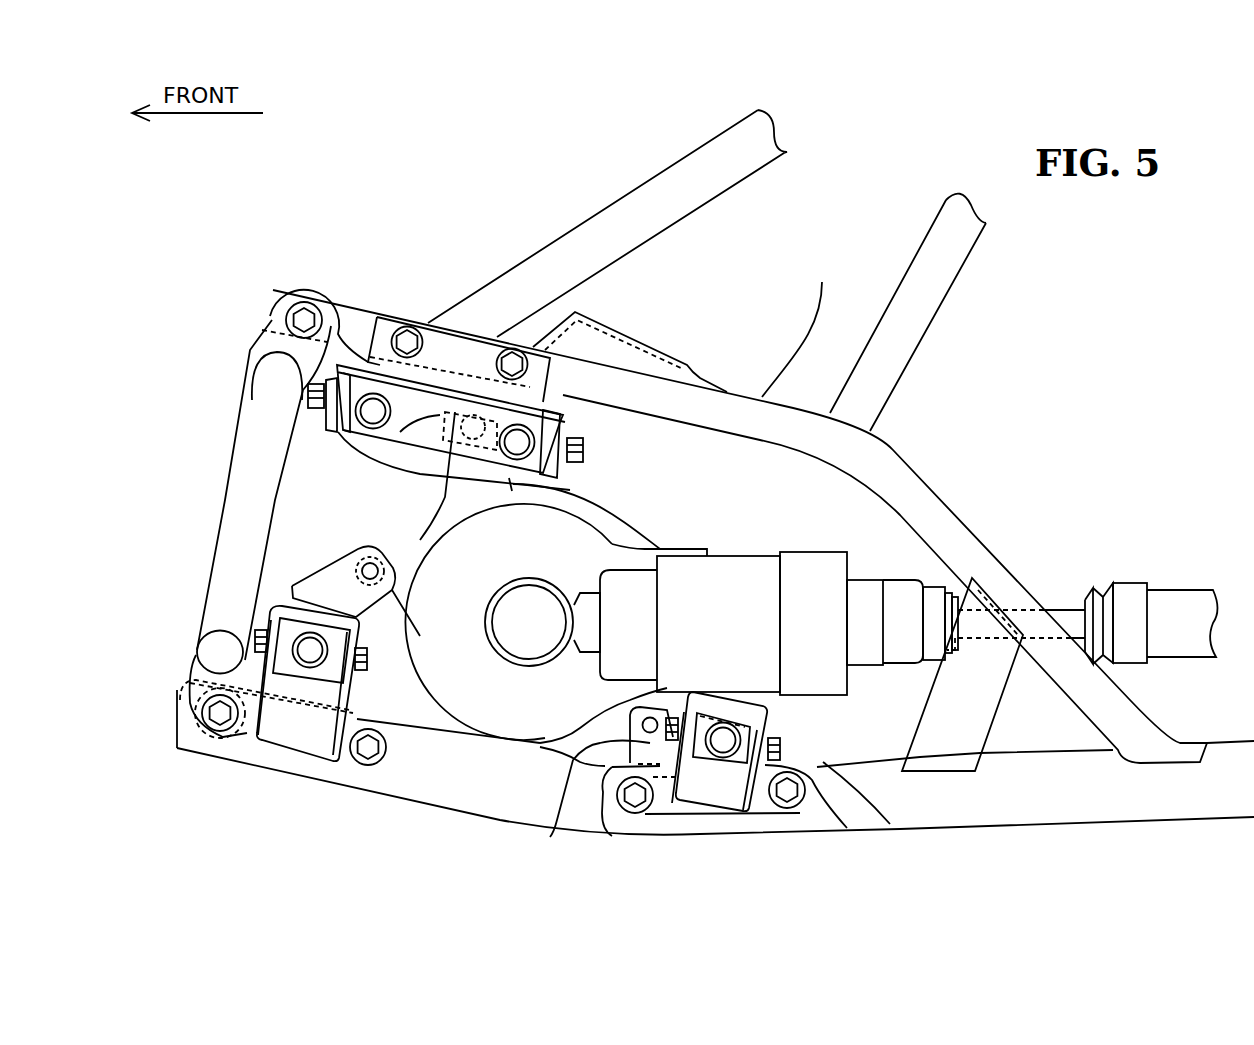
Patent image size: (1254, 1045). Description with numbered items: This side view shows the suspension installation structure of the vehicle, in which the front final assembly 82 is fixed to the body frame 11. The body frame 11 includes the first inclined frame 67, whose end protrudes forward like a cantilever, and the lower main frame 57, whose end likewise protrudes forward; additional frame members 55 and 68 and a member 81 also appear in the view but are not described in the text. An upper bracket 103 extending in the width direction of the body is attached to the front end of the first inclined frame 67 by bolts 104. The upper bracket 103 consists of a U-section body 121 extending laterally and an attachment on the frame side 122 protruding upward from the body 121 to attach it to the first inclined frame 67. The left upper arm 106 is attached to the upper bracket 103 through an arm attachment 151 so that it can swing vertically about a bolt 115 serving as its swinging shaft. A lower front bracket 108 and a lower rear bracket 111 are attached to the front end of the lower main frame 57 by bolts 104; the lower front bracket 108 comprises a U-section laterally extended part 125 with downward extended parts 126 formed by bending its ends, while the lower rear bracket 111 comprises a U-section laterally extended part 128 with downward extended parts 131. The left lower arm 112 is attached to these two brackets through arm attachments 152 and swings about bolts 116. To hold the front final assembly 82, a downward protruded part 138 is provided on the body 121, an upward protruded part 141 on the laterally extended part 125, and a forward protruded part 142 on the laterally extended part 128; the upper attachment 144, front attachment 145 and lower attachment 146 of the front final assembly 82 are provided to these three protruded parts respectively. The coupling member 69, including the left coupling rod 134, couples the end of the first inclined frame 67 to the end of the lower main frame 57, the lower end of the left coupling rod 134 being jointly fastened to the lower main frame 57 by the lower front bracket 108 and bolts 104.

The body frame 11 is at (938, 490).
The seat frame tube 55 is at (653, 177).
The lower main frame 57 is at (448, 820).
The first inclined frame 67 is at (798, 326).
The rear frame tube 68 is at (914, 250).
The coupling member 69 is at (238, 429).
The damper rod 81 is at (1065, 597).
The front final assembly 82 is at (692, 545).
The upper bracket 103 is at (453, 352).
The bolt 104 is at (215, 723).
The left upper arm 106 is at (568, 440).
The lower front bracket 108 is at (297, 726).
The lower rear bracket 111 is at (718, 787).
The left lower arm 112 is at (708, 760).
The bolt 115 is at (300, 390).
The bolt 116 is at (256, 636).
The body of the bracket 121 is at (326, 430).
The attachment on the frame side 122 is at (557, 368).
The laterally extended part 125 is at (280, 602).
The downward extended part 126 is at (250, 738).
The laterally extended part 128 is at (767, 720).
The downward extended part 131 is at (772, 818).
The left coupling rod 134 is at (251, 494).
The downward protruded part 138 is at (400, 432).
The upward protruded part 141 is at (325, 575).
The forward protruded part 142 is at (630, 765).
The upper attachment 144 is at (560, 496).
The front attachment 145 is at (397, 562).
The lower attachment 146 is at (620, 772).
The arm attachment 151 is at (413, 417).
The arm attachment 152 is at (336, 669).